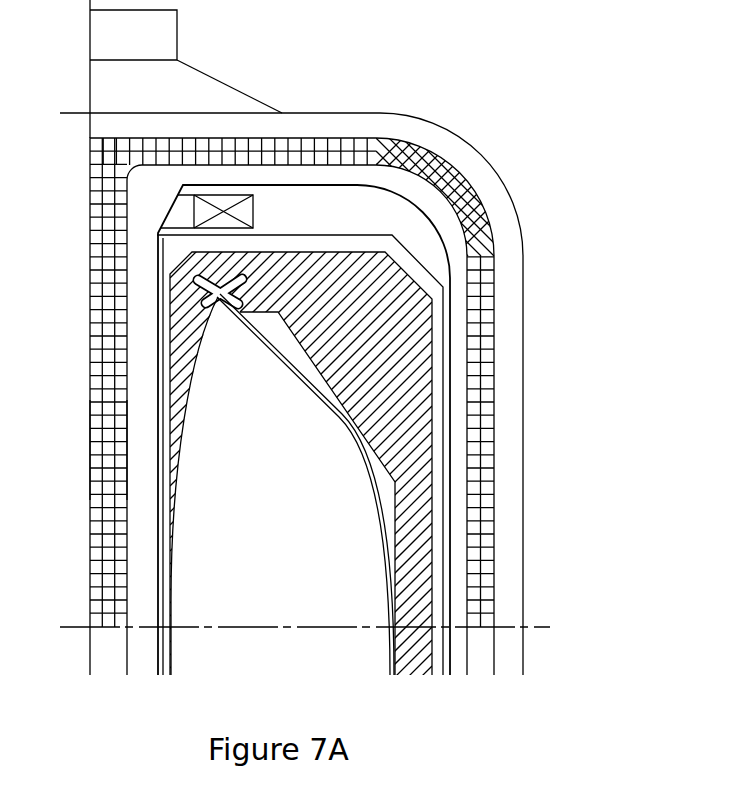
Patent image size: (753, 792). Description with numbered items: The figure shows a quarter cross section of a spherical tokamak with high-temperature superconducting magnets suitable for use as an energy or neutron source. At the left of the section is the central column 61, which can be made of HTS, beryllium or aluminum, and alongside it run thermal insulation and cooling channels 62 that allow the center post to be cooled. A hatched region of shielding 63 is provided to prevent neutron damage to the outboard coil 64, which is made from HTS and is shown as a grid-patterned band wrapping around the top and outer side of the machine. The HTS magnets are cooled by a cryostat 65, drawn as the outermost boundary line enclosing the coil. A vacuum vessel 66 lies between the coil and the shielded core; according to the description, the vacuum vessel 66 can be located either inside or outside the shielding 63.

The central column 61 is at (109, 421).
The thermal insulation and cooling channels 62 is at (146, 479).
The shielding 63 is at (382, 328).
The outboard coil 64 is at (188, 150).
The cryostat 65 is at (398, 116).
The vacuum vessel 66 is at (426, 257).